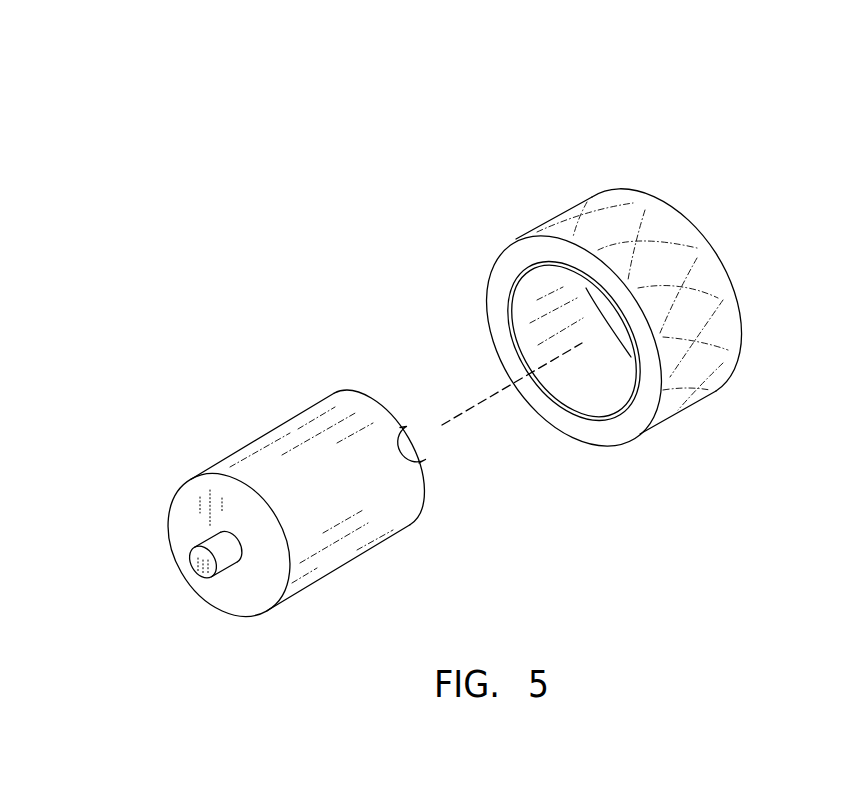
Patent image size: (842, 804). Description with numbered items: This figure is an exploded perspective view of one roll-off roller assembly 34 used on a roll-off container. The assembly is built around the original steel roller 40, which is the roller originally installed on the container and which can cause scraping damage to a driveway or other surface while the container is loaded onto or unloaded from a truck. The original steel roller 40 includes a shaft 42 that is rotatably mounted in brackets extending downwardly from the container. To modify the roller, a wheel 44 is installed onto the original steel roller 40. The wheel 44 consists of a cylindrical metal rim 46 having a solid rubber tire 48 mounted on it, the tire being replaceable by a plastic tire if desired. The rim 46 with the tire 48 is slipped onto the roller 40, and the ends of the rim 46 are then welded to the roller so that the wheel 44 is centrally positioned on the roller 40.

The roll-off roller assembly 34 is at (395, 282).
The original steel roller 40 is at (333, 559).
The shaft 42 is at (218, 553).
The wheel 44 is at (646, 322).
The cylindrical metal rim 46 is at (579, 380).
The solid rubber tire 48 is at (702, 320).